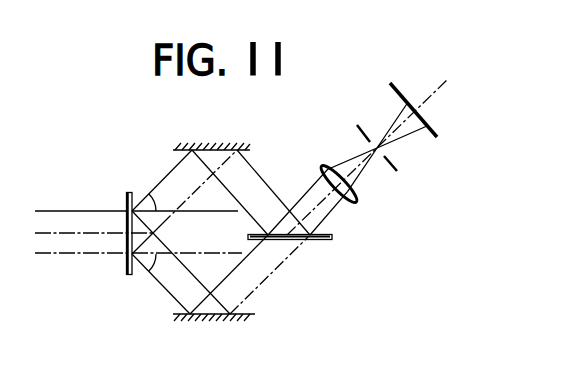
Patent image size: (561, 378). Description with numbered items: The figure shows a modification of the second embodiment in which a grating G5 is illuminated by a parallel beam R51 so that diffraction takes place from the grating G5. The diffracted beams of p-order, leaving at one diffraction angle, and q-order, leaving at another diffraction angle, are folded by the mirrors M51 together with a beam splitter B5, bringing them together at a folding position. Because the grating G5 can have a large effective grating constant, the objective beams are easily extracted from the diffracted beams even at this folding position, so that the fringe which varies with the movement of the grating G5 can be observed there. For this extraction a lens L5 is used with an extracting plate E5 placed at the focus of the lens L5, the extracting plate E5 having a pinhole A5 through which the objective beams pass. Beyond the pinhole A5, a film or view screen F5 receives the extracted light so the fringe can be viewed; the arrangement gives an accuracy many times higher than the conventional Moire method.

The parallel beam R51 is at (77, 255).
The grating G5 is at (130, 275).
The mirror M51 is at (222, 148).
The beam splitter B5 is at (323, 240).
The lens L5 is at (358, 197).
The pinhole A5 is at (377, 143).
The extracting plate E5 is at (398, 170).
The film or view screen F5 is at (438, 133).